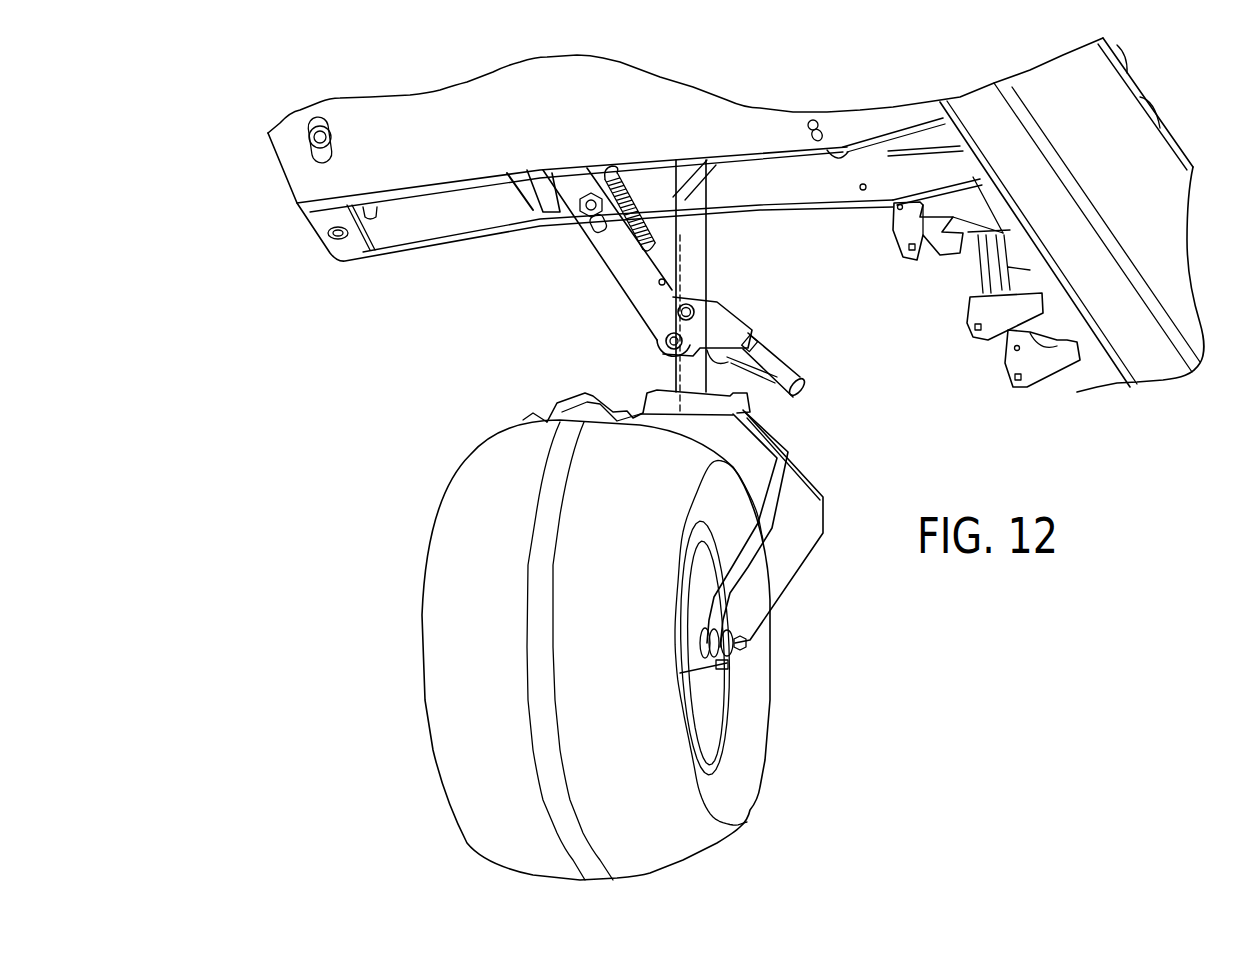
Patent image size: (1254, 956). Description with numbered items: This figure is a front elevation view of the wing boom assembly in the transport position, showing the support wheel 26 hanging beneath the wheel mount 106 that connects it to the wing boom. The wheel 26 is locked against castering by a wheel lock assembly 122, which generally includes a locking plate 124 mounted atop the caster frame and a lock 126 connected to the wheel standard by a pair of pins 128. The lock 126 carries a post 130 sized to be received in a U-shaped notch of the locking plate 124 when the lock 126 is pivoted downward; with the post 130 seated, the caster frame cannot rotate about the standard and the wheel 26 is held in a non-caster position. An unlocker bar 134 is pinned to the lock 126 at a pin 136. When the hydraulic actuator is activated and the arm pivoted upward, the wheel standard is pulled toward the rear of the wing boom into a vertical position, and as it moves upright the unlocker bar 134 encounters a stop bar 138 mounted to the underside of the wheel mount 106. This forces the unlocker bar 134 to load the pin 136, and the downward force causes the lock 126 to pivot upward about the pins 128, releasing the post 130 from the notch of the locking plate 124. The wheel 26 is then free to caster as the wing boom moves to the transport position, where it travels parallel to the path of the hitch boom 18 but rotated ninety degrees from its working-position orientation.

The hitch boom 18 is at (800, 553).
The wheel 26 is at (445, 668).
The wheel mount 106 is at (310, 182).
The wheel lock assembly 122 is at (827, 343).
The locking plate 124 is at (560, 407).
The lock 126 is at (722, 320).
The pins 128 is at (686, 307).
The post 130 is at (800, 380).
The unlocker bar 134 is at (610, 243).
The pin 136 is at (667, 340).
The stop bar 138 is at (547, 197).